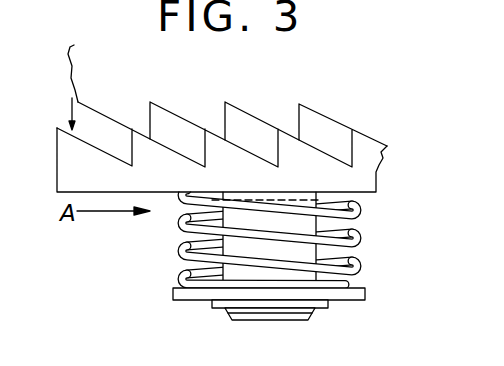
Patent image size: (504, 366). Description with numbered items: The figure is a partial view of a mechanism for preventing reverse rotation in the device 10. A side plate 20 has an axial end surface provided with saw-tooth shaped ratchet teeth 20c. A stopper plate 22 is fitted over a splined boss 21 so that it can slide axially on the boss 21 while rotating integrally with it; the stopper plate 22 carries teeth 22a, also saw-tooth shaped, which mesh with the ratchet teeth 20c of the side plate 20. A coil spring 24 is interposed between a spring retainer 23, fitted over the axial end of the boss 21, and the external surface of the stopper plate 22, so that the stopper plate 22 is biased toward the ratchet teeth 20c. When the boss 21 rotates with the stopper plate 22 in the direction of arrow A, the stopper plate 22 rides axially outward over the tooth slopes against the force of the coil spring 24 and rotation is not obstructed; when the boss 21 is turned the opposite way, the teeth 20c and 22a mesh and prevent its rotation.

The adjusting device 10 is at (40, 365).
The side plate 20 is at (349, 119).
The ratchet teeth 20c is at (153, 119).
The boss 21 is at (300, 314).
The stopper plate 22 is at (66, 164).
The teeth 22a is at (288, 148).
The spring retainer 23 is at (198, 292).
The coil spring 24 is at (182, 223).